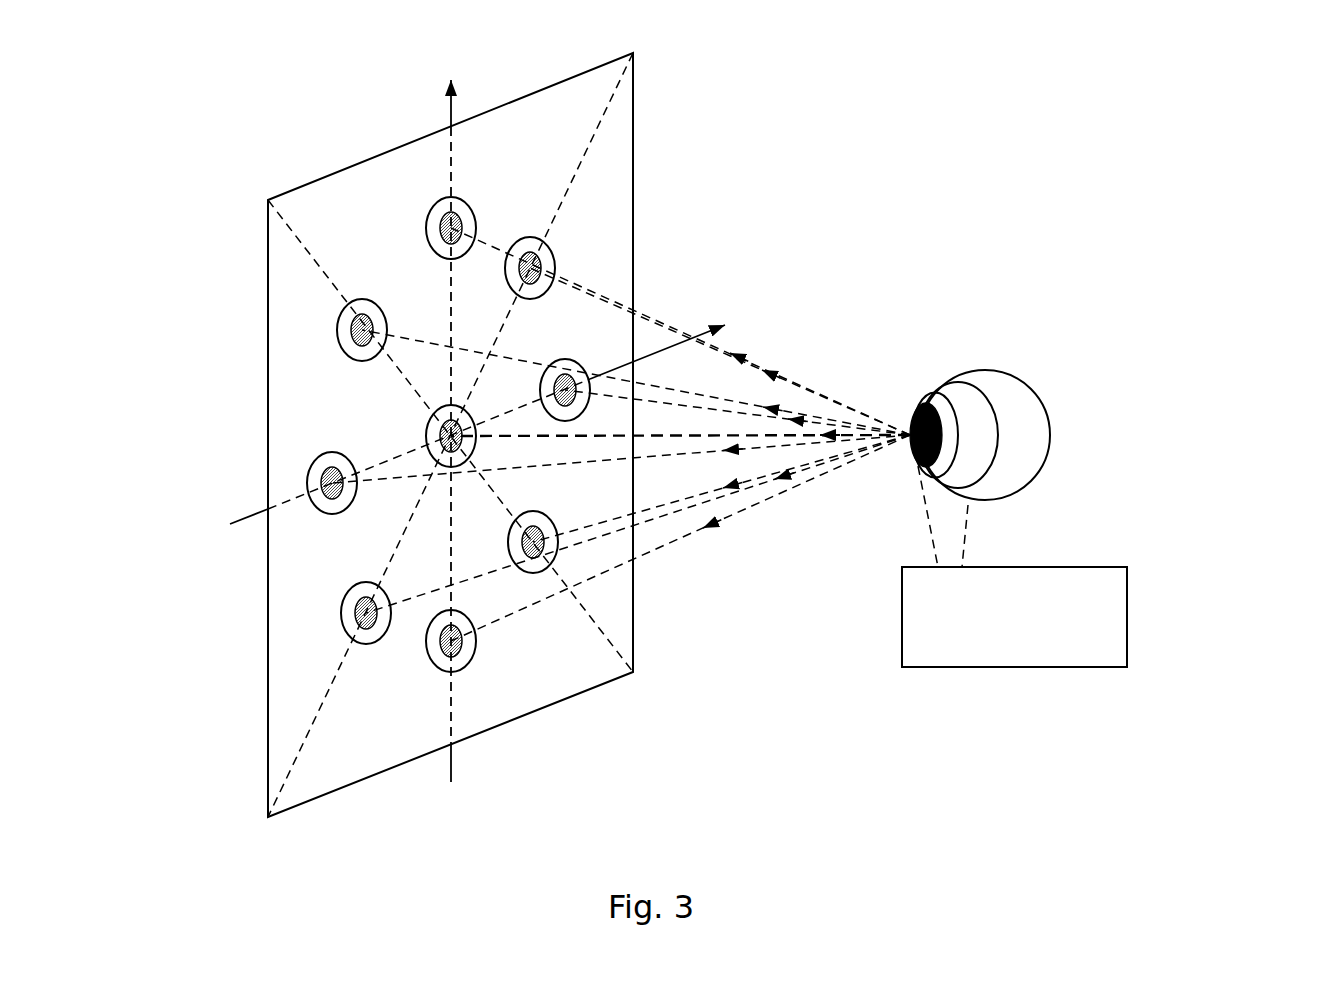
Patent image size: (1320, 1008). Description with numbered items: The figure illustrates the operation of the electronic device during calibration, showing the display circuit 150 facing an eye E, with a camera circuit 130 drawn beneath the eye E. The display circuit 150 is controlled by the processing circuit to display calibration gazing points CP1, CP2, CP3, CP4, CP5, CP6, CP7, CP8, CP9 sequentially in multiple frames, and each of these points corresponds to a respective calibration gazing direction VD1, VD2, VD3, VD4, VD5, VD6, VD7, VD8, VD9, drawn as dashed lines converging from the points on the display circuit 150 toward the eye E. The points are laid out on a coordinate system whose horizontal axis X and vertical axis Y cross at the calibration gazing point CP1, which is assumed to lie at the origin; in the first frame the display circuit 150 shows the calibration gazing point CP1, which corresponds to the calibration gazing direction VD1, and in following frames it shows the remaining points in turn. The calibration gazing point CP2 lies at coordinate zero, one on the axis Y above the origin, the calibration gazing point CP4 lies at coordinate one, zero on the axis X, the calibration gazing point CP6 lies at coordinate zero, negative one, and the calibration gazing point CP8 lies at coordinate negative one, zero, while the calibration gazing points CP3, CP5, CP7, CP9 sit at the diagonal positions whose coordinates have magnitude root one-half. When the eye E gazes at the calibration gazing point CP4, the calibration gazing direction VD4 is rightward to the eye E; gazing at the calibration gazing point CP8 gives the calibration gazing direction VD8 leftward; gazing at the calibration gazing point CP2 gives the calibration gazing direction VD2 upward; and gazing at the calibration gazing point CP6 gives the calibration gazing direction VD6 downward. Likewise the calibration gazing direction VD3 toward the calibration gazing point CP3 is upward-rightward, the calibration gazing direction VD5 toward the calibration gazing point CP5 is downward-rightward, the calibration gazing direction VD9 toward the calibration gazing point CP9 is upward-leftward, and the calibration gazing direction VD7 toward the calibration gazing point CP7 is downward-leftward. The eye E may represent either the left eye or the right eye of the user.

The display circuit 150 is at (576, 70).
The camera circuit 130 is at (1128, 617).
The eye E is at (1040, 468).
The calibration gazing point CP1 is at (446, 433).
The calibration gazing point CP2 is at (449, 224).
The calibration gazing point CP3 is at (531, 256).
The calibration gazing point CP4 is at (568, 386).
The calibration gazing point CP5 is at (545, 547).
The calibration gazing point CP6 is at (455, 642).
The calibration gazing point CP7 is at (366, 624).
The calibration gazing point CP8 is at (331, 496).
The calibration gazing point CP9 is at (358, 330).
The calibration gazing direction VD1 is at (847, 435).
The calibration gazing direction VD2 is at (735, 348).
The calibration gazing direction VD3 is at (766, 366).
The calibration gazing direction VD4 is at (791, 414).
The calibration gazing direction VD5 is at (725, 492).
The calibration gazing direction VD6 is at (705, 531).
The calibration gazing direction VD7 is at (777, 483).
The calibration gazing direction VD8 is at (726, 454).
The calibration gazing direction VD9 is at (768, 402).
The X axis X is at (479, 411).
The Y axis Y is at (447, 413).